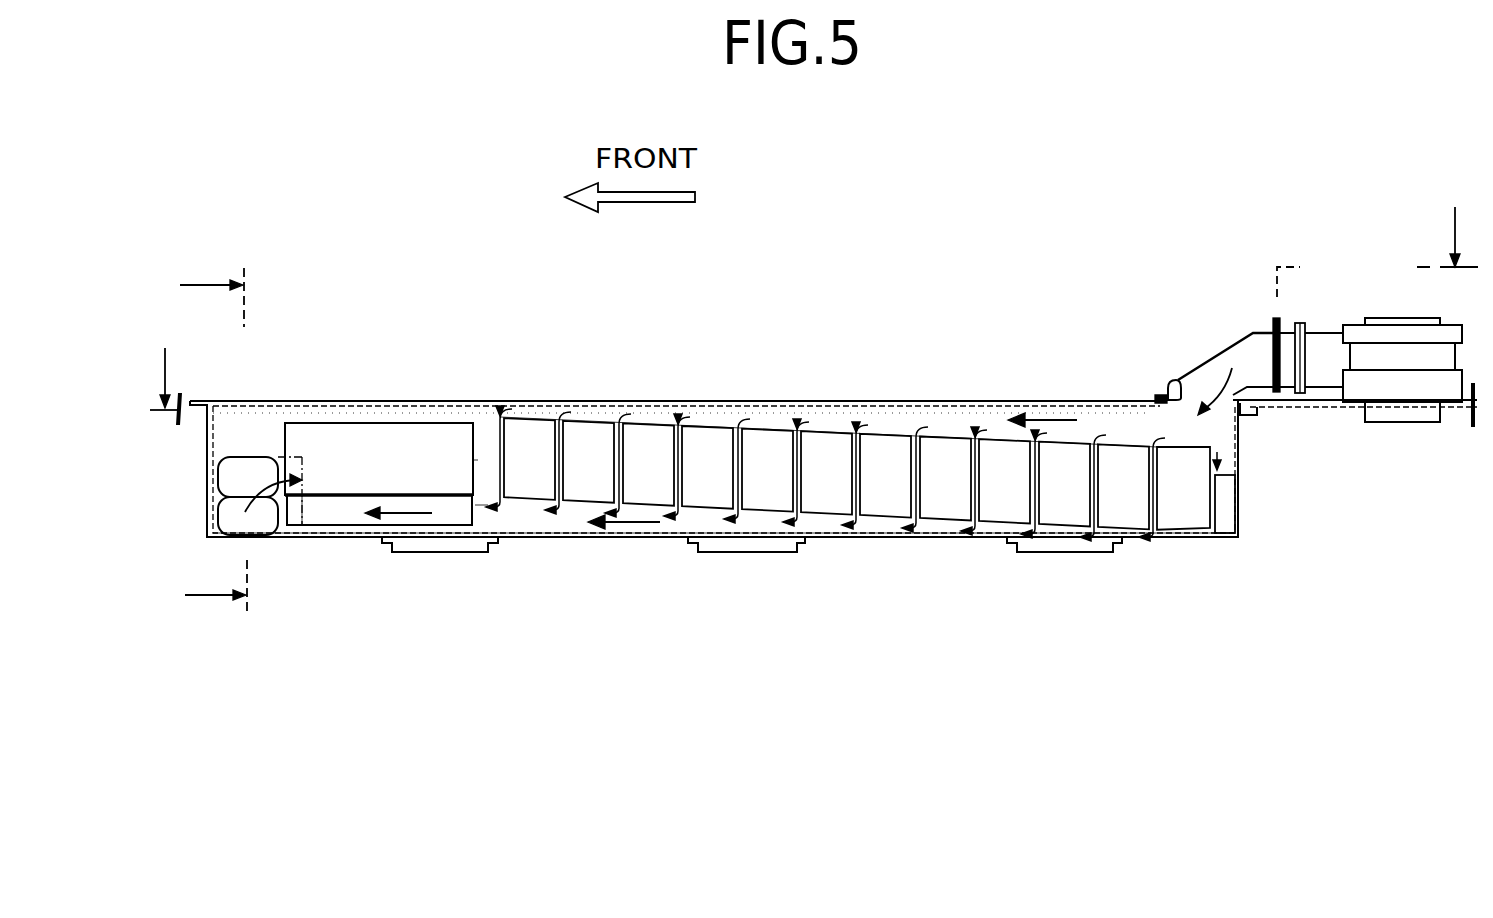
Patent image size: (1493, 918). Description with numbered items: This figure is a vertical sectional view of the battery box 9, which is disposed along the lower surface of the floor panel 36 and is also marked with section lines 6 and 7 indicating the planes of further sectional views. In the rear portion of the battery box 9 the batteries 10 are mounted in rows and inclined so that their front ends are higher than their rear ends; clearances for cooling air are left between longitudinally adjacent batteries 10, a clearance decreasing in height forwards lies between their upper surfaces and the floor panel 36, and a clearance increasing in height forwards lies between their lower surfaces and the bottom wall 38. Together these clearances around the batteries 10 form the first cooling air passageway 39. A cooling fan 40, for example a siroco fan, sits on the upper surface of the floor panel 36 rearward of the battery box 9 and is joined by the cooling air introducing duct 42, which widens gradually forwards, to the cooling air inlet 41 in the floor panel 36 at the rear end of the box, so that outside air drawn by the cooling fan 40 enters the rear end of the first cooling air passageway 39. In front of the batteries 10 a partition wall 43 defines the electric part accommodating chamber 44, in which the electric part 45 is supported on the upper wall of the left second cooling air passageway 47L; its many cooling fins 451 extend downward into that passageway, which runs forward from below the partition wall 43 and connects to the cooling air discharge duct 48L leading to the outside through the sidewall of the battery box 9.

The section line 6- 6 is at (814, 316).
The section line 7- 7 is at (213, 448).
The battery box 9 is at (934, 548).
The battery 10 is at (540, 471).
The floor panel 36 is at (480, 400).
The bottom wall 38 is at (633, 538).
The first cooling air passageway 39 is at (950, 412).
The cooling fan 40 is at (1396, 308).
The cooling air inlet 41 is at (1177, 382).
The cooling air introducing duct 42 is at (1228, 348).
The partition wall 43 is at (490, 477).
The electric part accommodating chamber 44 is at (418, 413).
The electric part 45 is at (401, 483).
The cooling fins 451 is at (322, 515).
The left second cooling air passageway 47L is at (355, 528).
The left cooling air discharge duct 48L is at (250, 456).